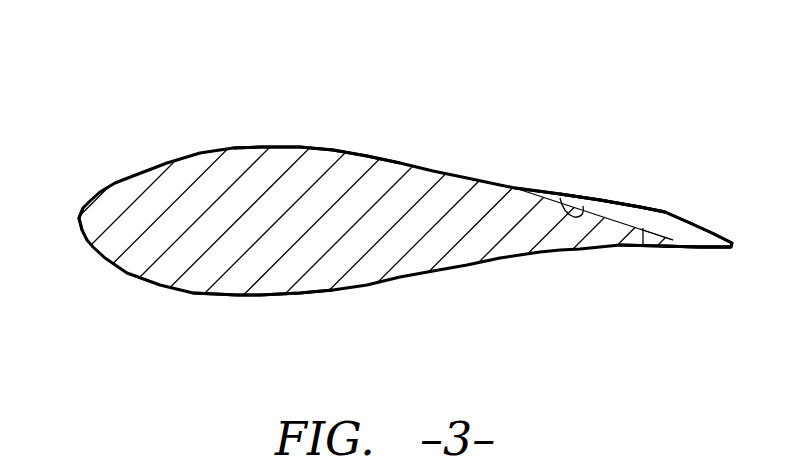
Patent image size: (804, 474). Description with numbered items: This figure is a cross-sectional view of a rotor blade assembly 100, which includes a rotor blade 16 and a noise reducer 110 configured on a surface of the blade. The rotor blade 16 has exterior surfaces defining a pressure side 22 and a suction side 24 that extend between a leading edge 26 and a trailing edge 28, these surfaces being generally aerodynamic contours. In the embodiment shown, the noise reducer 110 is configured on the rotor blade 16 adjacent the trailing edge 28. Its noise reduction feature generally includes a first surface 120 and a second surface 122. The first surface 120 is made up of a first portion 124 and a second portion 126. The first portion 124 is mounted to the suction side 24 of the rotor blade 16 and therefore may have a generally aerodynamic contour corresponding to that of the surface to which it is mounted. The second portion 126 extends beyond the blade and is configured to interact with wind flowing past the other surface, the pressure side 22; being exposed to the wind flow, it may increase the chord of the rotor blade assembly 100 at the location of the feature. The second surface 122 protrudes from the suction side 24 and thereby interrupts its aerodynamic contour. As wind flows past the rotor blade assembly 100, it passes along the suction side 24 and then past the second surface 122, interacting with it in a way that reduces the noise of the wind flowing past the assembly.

The rotor blade 16 is at (147, 139).
The leading edge 26 is at (78, 218).
The suction side 24 is at (339, 149).
The pressure side 22 is at (267, 297).
The trailing edge 28 is at (655, 243).
The rotor blade assembly 100 is at (484, 106).
The noise reducer 110 is at (721, 203).
The first surface 120 is at (699, 256).
The second surface 122 is at (608, 193).
The first portion 124 is at (560, 198).
The second portion 126 is at (674, 248).